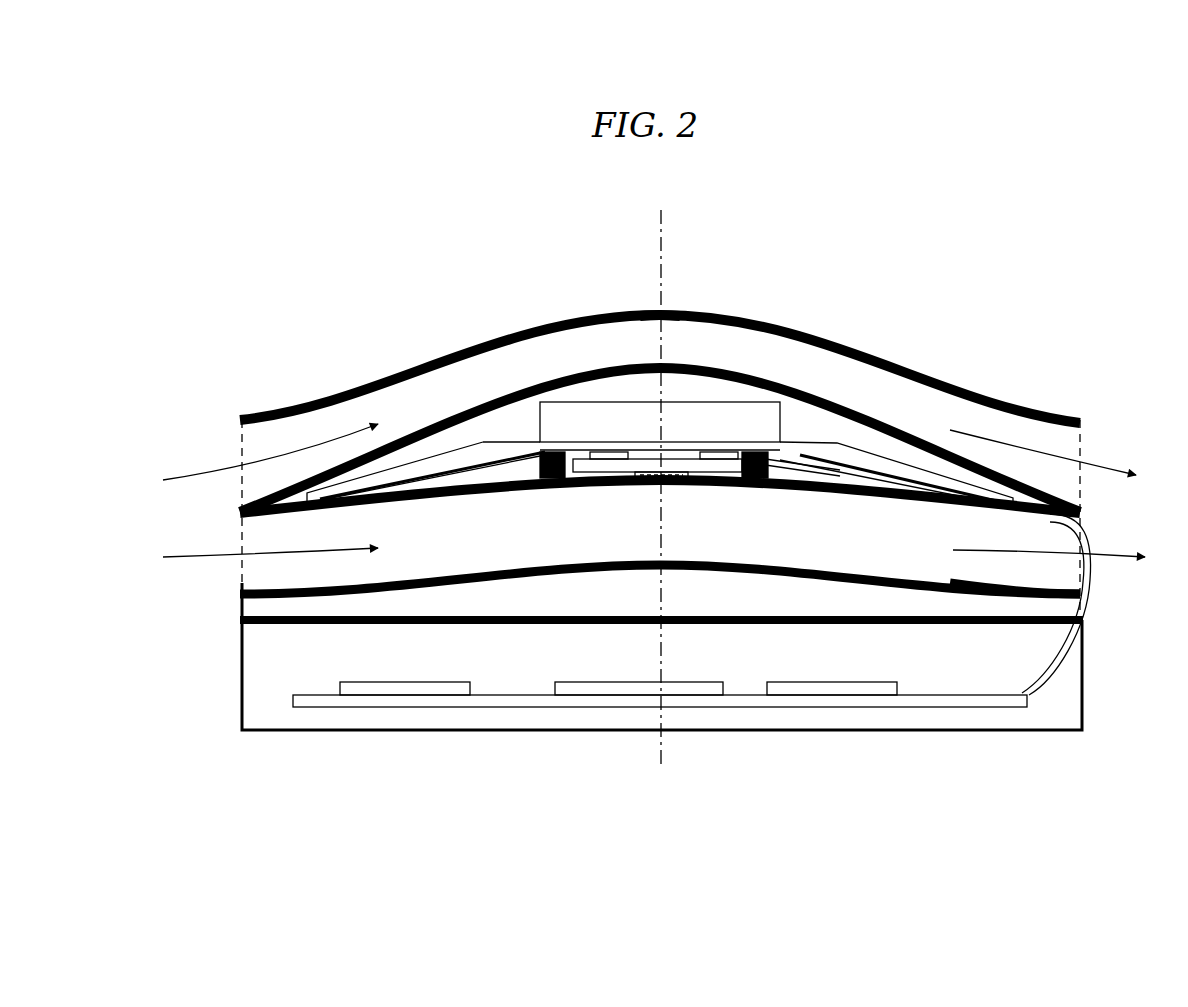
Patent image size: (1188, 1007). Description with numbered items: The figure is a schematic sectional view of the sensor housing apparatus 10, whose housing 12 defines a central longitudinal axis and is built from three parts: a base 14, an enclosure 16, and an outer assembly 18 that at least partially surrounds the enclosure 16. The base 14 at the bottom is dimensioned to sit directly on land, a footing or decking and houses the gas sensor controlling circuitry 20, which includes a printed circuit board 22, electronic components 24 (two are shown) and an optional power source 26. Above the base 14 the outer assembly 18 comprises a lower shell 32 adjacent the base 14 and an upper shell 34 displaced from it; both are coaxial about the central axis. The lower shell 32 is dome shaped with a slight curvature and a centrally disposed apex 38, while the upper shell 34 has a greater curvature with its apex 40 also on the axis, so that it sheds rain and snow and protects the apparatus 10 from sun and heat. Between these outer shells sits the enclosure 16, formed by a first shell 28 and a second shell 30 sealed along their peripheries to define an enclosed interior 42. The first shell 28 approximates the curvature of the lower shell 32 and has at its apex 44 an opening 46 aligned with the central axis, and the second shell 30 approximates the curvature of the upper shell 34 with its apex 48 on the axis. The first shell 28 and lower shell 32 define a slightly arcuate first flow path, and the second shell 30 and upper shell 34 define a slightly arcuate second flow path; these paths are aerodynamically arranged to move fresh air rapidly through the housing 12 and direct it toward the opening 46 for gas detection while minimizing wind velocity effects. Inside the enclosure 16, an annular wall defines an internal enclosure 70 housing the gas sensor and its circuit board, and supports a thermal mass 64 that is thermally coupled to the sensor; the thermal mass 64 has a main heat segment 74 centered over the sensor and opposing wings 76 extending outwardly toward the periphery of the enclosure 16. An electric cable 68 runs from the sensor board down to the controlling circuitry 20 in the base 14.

The sensor housing apparatus 10 is at (638, 527).
The housing 12 is at (634, 662).
The base 14 is at (1094, 740).
The enclosure 16 is at (1086, 500).
The outer assembly 18 is at (210, 472).
The gas sensor controlling circuitry 20 is at (640, 674).
The printed circuit board 22 is at (930, 698).
The electronic component 24 is at (395, 690).
The power source 26 is at (680, 690).
The first shell 28 is at (457, 503).
The second shell 30 is at (478, 407).
The lower shell 32 is at (935, 582).
The upper shell 34 is at (330, 405).
The apex 38 is at (657, 568).
The apex 40 is at (663, 313).
The enclosed interior 42 is at (808, 420).
The apex 44 is at (620, 458).
The opening 46 is at (663, 479).
The apex 48 is at (682, 362).
The thermal mass 64 is at (640, 392).
The electric cable 68 is at (897, 487).
The internal enclosure 70 is at (750, 488).
The main heat segment 74 is at (717, 413).
The wings 76 is at (437, 460).